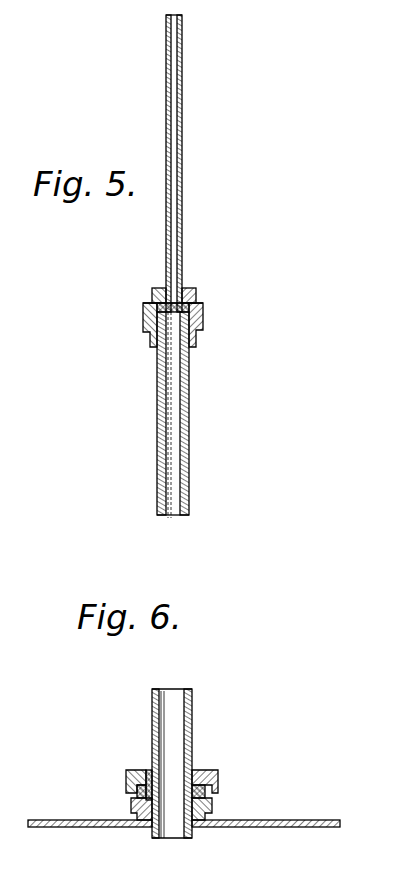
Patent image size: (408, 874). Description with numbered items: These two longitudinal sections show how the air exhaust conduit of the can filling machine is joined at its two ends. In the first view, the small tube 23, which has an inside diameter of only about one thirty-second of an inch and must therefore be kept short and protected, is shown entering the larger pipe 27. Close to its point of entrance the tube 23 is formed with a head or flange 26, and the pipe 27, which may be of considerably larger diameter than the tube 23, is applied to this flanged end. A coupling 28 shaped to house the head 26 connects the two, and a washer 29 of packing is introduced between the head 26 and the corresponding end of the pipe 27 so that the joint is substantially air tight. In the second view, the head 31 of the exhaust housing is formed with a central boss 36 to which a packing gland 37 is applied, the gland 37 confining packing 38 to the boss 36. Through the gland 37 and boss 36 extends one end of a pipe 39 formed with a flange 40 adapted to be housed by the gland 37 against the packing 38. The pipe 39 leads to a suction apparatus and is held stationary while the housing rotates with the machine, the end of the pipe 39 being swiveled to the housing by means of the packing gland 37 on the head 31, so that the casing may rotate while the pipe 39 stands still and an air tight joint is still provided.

In FIG. 5, the small tube 23 is at (183, 212).
In FIG. 5, the head or flange 26 is at (194, 290).
In FIG. 5, the pipe 27 is at (189, 420).
In FIG. 5, the coupling 28 is at (204, 322).
In FIG. 5, the washer of packing 29 is at (143, 313).
In FIG. 6, the head 31 is at (64, 829).
In FIG. 6, the central boss 36 is at (212, 815).
In FIG. 6, the packing gland 37 is at (218, 769).
In FIG. 6, the packing 38 is at (136, 790).
In FIG. 6, the pipe 39 is at (192, 706).
In FIG. 6, the flange 40 is at (148, 770).